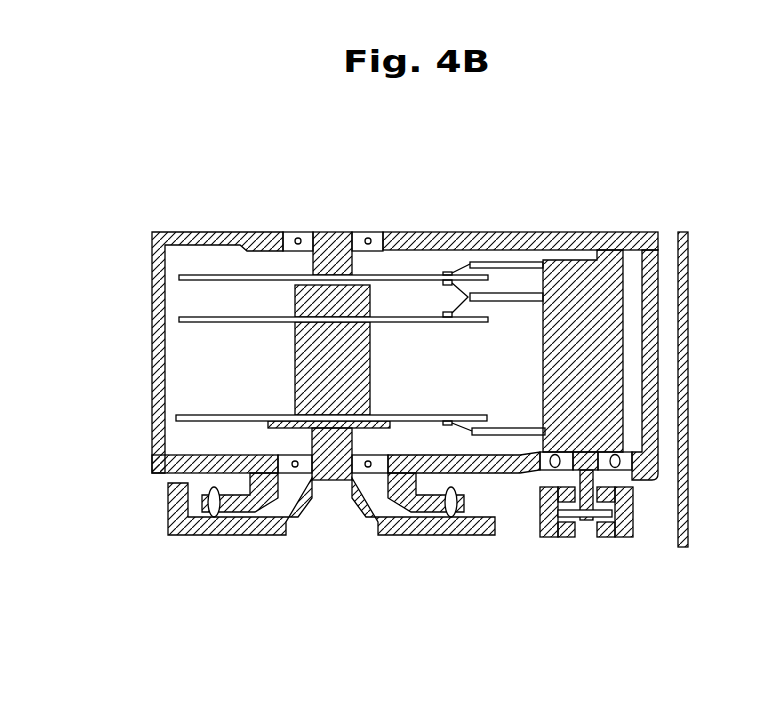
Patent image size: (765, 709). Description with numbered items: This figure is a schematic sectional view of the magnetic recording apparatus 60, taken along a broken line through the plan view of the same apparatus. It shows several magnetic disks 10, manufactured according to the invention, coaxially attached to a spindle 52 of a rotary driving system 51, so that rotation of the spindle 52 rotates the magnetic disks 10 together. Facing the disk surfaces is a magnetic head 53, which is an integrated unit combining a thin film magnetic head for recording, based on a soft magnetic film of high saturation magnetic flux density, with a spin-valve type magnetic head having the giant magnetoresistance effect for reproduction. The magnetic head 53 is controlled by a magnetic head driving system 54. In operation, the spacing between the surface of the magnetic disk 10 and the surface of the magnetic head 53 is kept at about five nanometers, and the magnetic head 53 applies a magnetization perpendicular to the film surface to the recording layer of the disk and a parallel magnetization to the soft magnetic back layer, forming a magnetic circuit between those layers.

The magnetic disk 10 is at (198, 278).
The magnetic recording apparatus 60 is at (375, 210).
The rotary driving system 51 is at (333, 450).
The spindle 52 is at (295, 336).
The magnetic head 53 is at (445, 273).
The magnetic head driving system 54 is at (578, 270).